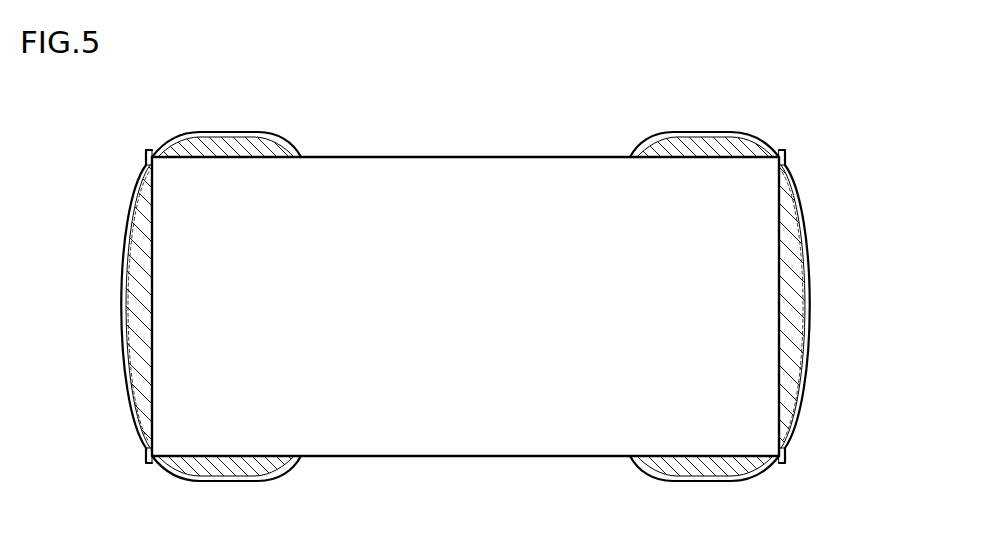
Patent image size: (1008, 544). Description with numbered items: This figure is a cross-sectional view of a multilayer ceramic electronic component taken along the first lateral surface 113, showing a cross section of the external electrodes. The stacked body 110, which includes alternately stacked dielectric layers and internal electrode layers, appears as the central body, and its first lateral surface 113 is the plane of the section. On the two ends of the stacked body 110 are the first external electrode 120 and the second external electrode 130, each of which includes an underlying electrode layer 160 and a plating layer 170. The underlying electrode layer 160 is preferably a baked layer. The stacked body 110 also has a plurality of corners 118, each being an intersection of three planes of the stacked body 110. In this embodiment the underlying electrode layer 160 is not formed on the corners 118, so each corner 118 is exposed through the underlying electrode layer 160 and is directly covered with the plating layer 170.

The stacked body 110 is at (504, 308).
The first lateral surface 113 is at (481, 215).
The corners 118 is at (151, 158).
The first external electrode 120 is at (802, 490).
The second external electrode 130 is at (130, 121).
The underlying electrode layer 160 is at (138, 240).
The plating layer 170 is at (133, 192).